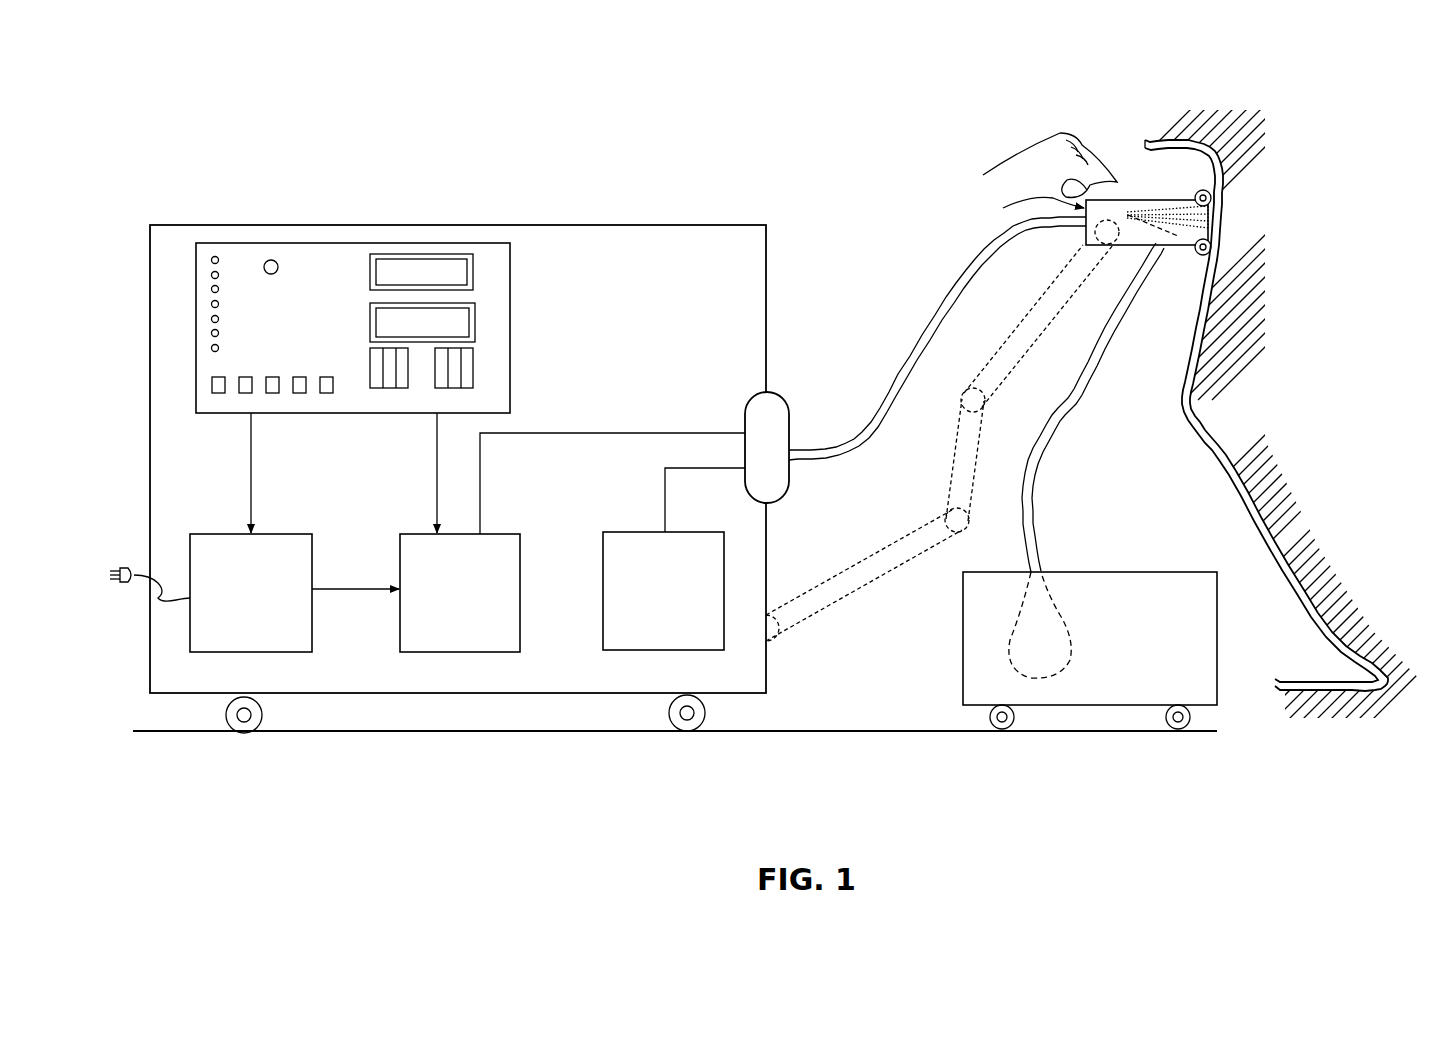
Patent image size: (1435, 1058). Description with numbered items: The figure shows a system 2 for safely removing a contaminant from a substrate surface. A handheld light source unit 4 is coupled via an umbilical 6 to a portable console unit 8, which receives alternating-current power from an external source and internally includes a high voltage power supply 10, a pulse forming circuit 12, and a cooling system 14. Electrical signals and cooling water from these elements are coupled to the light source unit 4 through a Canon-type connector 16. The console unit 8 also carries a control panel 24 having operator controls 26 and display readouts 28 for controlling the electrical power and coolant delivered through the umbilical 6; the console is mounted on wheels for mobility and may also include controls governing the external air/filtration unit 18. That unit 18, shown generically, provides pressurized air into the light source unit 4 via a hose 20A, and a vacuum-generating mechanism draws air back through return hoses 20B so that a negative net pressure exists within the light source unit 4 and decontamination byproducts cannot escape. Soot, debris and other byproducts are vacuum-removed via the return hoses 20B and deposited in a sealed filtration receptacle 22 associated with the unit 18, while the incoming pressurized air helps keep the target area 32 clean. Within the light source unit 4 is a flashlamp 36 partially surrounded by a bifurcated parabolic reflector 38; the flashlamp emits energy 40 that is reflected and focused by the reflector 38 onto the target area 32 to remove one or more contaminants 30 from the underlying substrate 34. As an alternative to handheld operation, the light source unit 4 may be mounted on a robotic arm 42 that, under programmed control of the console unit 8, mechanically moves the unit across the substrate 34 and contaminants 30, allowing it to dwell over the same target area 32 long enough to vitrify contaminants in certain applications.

The system 2 is at (832, 204).
The handheld light source unit 4 is at (1163, 200).
The umbilical 6 is at (957, 287).
The portable console unit 8 is at (468, 224).
The high voltage power supply 10 is at (283, 537).
The pulse forming circuit 12 is at (413, 535).
The cooling system 14 is at (630, 530).
The Canon-type connector 16 is at (782, 408).
The external air/filtration unit 18 is at (960, 695).
The pressurized air hose 20A is at (1053, 437).
The pressurized air return hoses 20B is at (1098, 409).
The filtration receptacle 22 is at (1030, 661).
The control panel 24 is at (512, 305).
The operator controls 26 is at (360, 363).
The display readouts 28 is at (352, 295).
The contaminants 30 is at (1225, 465).
The target area 32 is at (1214, 212).
The substrate 34 is at (1247, 440).
The flashlamp 36 is at (1131, 224).
The bifurcated parabolic reflector 38 is at (1173, 207).
The energy 40 is at (1184, 226).
The robotic arm 42 is at (953, 480).